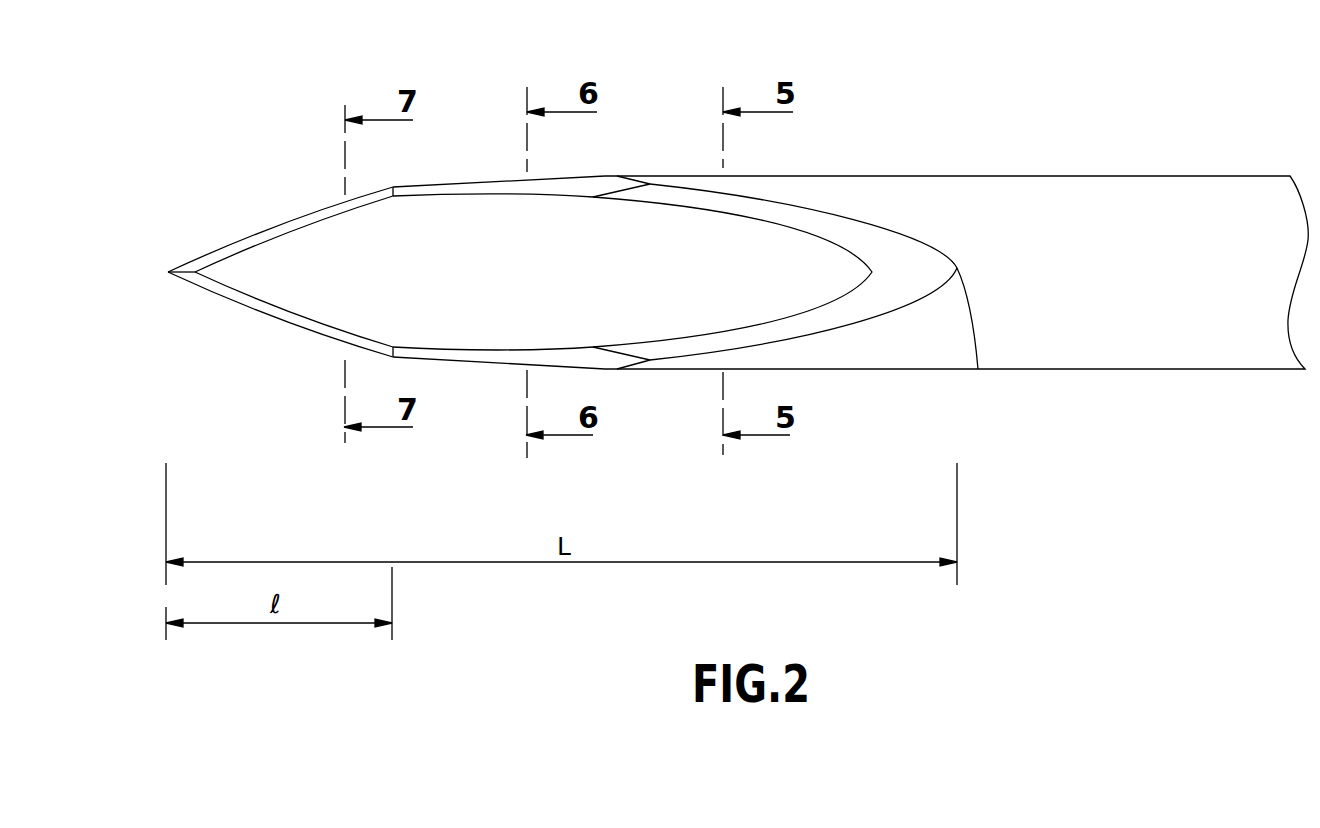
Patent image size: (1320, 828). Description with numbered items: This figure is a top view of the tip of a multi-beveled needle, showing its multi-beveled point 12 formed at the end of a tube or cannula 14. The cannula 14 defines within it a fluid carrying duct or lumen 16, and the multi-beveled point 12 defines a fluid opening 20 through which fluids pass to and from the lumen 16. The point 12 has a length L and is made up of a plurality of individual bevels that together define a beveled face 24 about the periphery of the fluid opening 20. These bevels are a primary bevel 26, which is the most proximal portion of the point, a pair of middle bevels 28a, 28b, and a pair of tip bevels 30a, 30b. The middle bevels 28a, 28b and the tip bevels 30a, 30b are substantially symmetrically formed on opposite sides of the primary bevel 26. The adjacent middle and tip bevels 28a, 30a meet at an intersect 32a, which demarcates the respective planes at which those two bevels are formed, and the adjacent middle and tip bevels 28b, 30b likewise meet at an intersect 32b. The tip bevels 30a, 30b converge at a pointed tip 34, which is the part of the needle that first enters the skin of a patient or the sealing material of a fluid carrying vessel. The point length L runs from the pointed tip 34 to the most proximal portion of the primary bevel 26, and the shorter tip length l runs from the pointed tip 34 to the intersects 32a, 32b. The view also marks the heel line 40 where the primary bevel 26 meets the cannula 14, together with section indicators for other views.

The multi-beveled point 12 is at (489, 95).
The tube or cannula 14 is at (1110, 192).
The fluid carrying duct or lumen 16 is at (806, 253).
The fluid opening 20 is at (332, 253).
The beveled face 24 is at (332, 341).
The primary bevel 26 is at (880, 312).
The middle bevel 28a is at (597, 360).
The middle bevel 28b is at (600, 186).
The tip bevel 30a is at (257, 310).
The tip bevel 30b is at (243, 240).
The intersect 32a is at (413, 357).
The intersect 32b is at (410, 189).
The pointed tip 34 is at (166, 273).
The bevel heel 40 is at (978, 369).